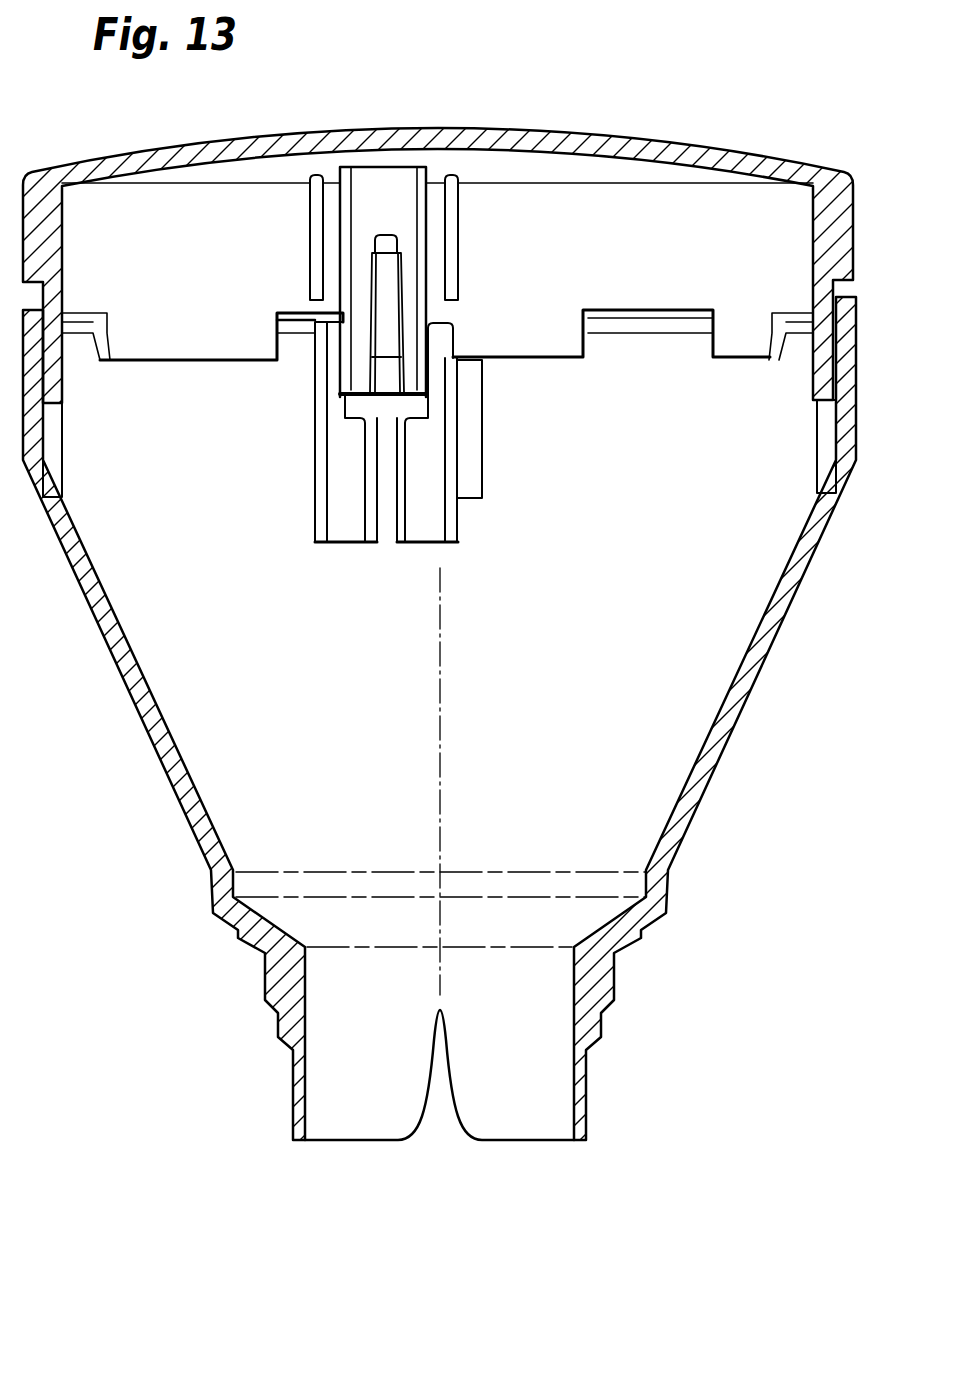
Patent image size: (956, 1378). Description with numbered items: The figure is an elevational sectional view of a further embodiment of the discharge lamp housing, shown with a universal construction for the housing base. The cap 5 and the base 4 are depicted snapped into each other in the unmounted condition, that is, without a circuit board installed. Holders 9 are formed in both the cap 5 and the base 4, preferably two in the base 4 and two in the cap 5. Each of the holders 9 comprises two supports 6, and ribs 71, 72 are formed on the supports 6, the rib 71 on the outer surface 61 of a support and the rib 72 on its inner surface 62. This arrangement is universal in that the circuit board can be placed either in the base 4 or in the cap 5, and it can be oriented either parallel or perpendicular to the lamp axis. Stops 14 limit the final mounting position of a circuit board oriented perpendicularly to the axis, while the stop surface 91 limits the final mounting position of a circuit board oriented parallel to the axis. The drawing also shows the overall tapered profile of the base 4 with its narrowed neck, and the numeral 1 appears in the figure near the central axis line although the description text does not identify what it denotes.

The container assembly 1 is at (445, 652).
The base 4 is at (766, 666).
The cap 5 is at (717, 150).
The supports 6 is at (358, 277).
The holders 9 is at (403, 212).
The stops 14 is at (455, 232).
The outer surface 61 is at (352, 212).
The inner surface 62 is at (345, 301).
The rib 71 is at (423, 333).
The rib 72 is at (400, 296).
The stop surface 91 is at (380, 246).